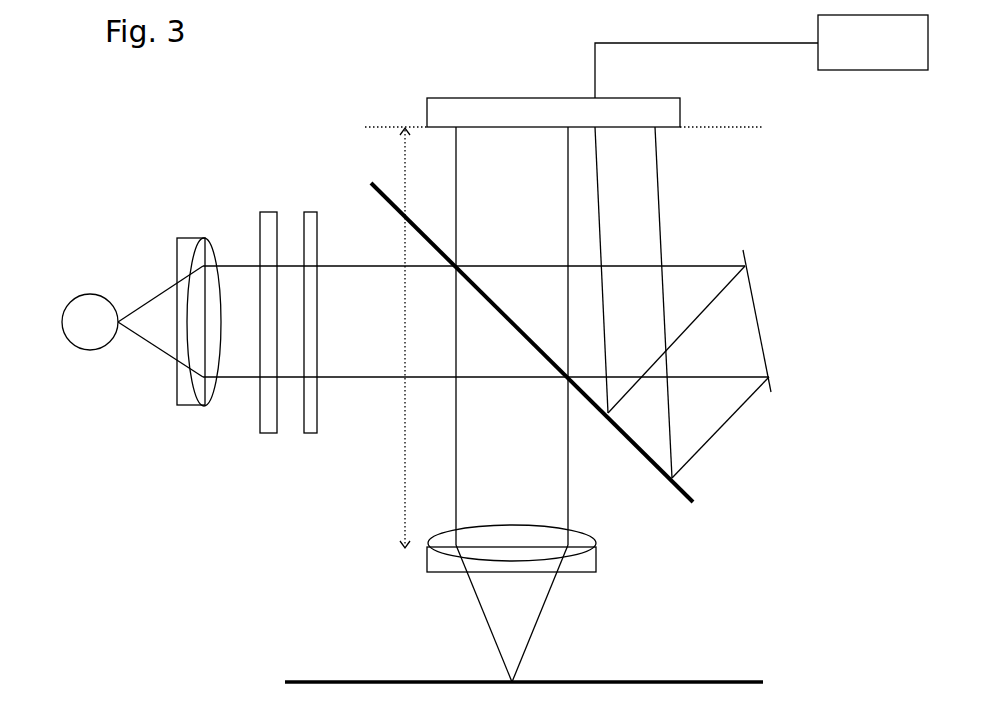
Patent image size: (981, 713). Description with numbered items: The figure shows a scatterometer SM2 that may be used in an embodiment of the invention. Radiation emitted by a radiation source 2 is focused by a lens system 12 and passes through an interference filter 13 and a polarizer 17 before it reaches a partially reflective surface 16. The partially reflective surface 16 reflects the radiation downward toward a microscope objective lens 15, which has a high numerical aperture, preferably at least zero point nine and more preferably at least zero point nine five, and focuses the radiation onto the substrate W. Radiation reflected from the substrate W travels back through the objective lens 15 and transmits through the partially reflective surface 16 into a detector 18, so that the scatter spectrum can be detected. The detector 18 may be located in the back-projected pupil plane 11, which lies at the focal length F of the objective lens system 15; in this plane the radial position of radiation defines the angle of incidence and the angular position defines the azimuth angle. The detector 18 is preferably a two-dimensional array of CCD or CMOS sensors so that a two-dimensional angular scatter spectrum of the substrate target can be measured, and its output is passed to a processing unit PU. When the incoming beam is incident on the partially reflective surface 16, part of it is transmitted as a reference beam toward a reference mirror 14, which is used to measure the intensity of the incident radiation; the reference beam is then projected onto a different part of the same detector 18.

The radiation source 2 is at (96, 332).
The back-projected pupil plane 11 is at (751, 127).
The lens system 12 is at (186, 238).
The interference filter 13 is at (270, 212).
The reference mirror 14 is at (748, 258).
The microscope objective lens 15 is at (427, 560).
The partially reflective surface 16 is at (682, 492).
The polarizer 17 is at (311, 212).
The detector 18 is at (465, 98).
The scatterometer SM2 is at (125, 221).
The processing unit PU is at (761, 56).
The focal length F is at (396, 337).
The substrate W is at (646, 682).